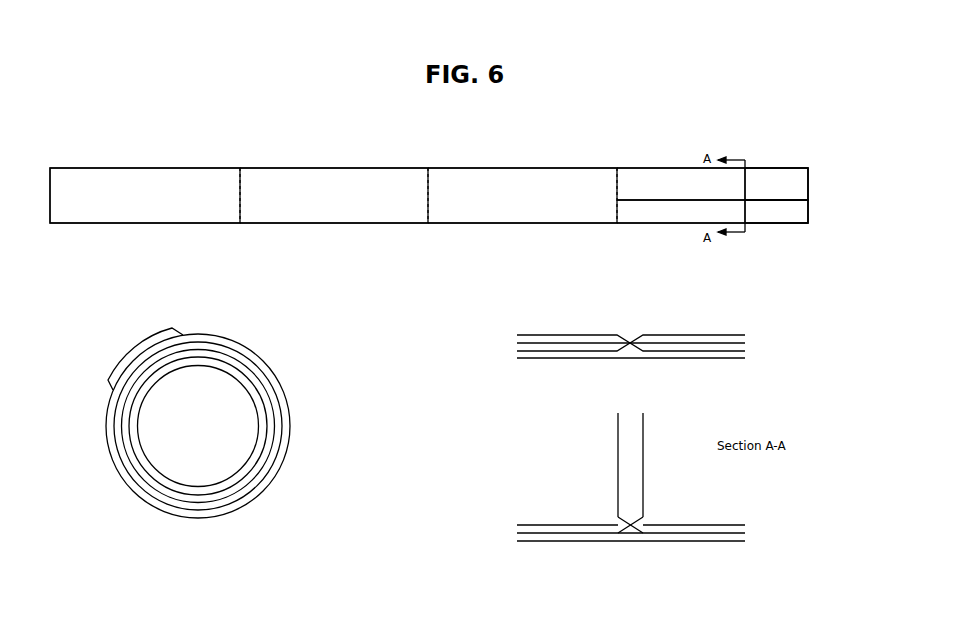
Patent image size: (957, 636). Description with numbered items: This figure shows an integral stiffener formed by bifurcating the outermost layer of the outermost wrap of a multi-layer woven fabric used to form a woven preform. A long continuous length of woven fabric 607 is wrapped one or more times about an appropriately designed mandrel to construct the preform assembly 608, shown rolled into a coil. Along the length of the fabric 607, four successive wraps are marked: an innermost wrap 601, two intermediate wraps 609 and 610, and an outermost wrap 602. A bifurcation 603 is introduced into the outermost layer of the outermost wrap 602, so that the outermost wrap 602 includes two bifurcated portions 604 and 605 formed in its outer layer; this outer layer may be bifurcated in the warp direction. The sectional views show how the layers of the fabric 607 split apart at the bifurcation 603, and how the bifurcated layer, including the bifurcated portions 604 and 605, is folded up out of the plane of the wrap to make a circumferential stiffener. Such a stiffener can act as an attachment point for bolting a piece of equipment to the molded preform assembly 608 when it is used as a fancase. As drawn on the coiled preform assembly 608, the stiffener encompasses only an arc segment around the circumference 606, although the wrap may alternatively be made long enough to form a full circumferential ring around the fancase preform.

The innermost wrap 601 is at (157, 202).
The outermost wrap 602 is at (672, 228).
The bifurcation 603 is at (660, 200).
The bifurcated portion 604 is at (787, 212).
The bifurcated portion 605 is at (782, 185).
The arc segment around the circumference 606 is at (148, 335).
The woven fabric 607 is at (118, 160).
The preform assembly 608 is at (298, 442).
The intermediate wrap 609 is at (320, 193).
The intermediate wrap 610 is at (488, 205).